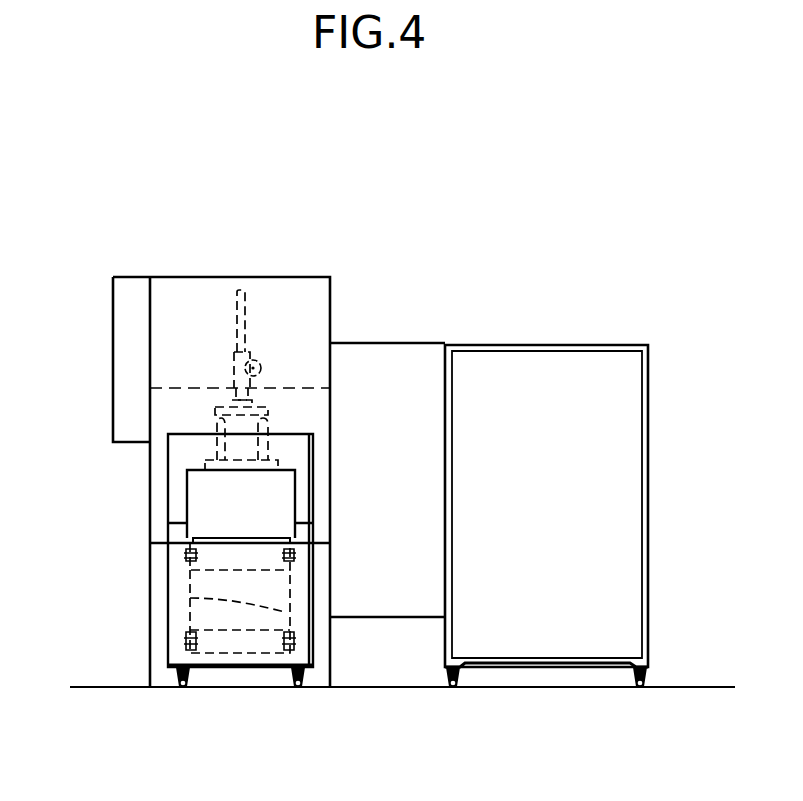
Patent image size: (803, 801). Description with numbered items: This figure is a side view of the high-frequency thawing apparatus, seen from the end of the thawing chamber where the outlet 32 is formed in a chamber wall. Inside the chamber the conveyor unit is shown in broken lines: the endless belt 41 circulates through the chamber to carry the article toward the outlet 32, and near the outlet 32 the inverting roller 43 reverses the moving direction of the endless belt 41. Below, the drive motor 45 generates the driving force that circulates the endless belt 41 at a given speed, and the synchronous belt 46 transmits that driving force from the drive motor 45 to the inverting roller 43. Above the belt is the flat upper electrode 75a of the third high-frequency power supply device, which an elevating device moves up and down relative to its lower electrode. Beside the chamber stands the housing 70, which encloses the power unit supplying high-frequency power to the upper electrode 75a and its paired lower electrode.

The outlet 32 is at (280, 491).
The endless belt 41 is at (218, 538).
The inverting roller 43 is at (190, 552).
The drive motor 45 is at (228, 668).
The synchronous belt 46 is at (190, 600).
The housing 70 is at (538, 344).
The upper electrode 75a is at (210, 454).